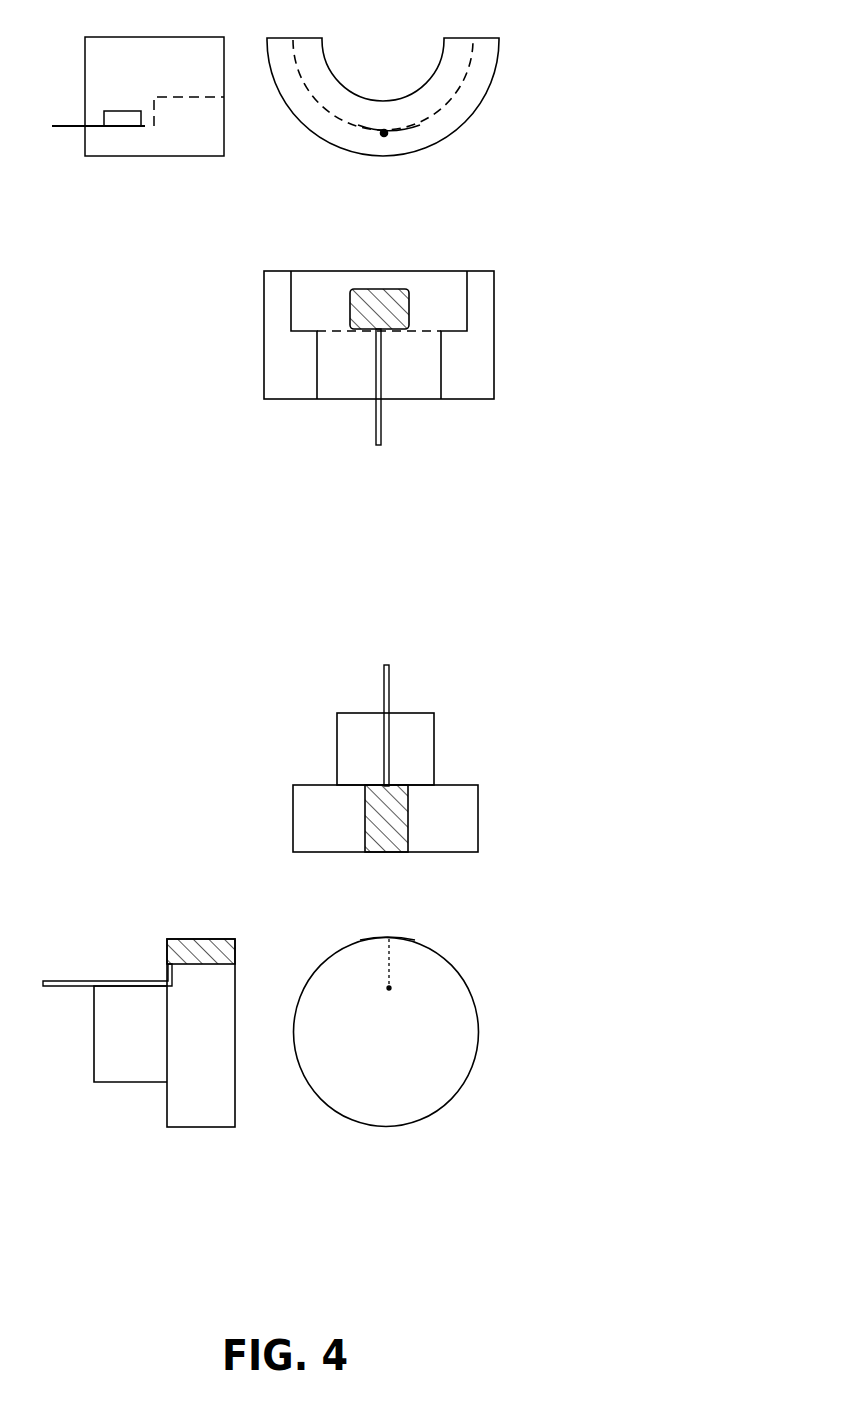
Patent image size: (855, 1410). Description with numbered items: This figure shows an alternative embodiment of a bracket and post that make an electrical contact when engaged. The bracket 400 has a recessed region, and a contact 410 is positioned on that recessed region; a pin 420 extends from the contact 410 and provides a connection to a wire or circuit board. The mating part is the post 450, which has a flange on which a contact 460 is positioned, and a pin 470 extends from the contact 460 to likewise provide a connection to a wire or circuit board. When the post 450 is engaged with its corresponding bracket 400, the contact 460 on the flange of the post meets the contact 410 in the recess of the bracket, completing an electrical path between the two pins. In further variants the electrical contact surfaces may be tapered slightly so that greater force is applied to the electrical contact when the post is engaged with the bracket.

The bracket 400 is at (495, 332).
The contact 410 is at (382, 289).
The pin 420 is at (383, 436).
The post 450 is at (460, 973).
The contact 460 is at (408, 818).
The pin 470 is at (395, 677).